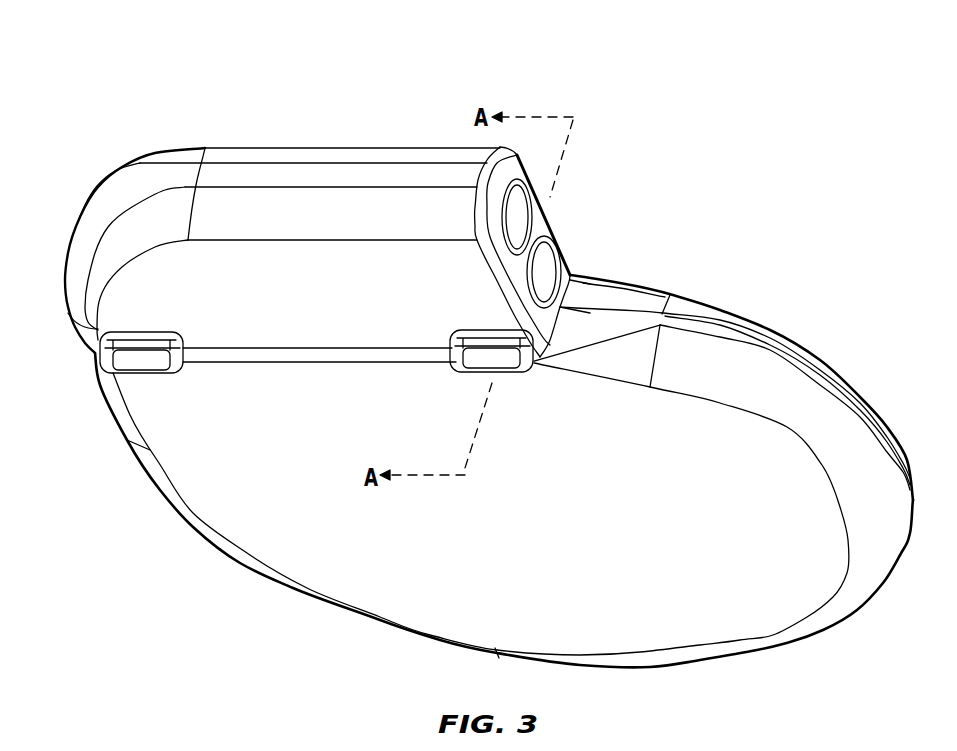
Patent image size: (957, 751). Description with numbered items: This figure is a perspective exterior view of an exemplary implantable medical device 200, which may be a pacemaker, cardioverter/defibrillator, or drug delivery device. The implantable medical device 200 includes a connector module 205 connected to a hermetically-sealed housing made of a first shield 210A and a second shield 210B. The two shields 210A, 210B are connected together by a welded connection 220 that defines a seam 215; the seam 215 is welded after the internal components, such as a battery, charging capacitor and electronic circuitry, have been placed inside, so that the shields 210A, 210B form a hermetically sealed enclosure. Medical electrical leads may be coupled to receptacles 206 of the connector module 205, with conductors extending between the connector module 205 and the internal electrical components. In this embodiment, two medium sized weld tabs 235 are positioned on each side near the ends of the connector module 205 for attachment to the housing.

The implantable medical device 200 is at (684, 63).
The connector module 205 is at (250, 150).
The receptacle 206 is at (518, 222).
The first shield 210A is at (358, 597).
The second shield 210B is at (703, 298).
The seam 215 is at (783, 360).
The welded connection 220 is at (495, 372).
The weld tab 235 is at (500, 374).